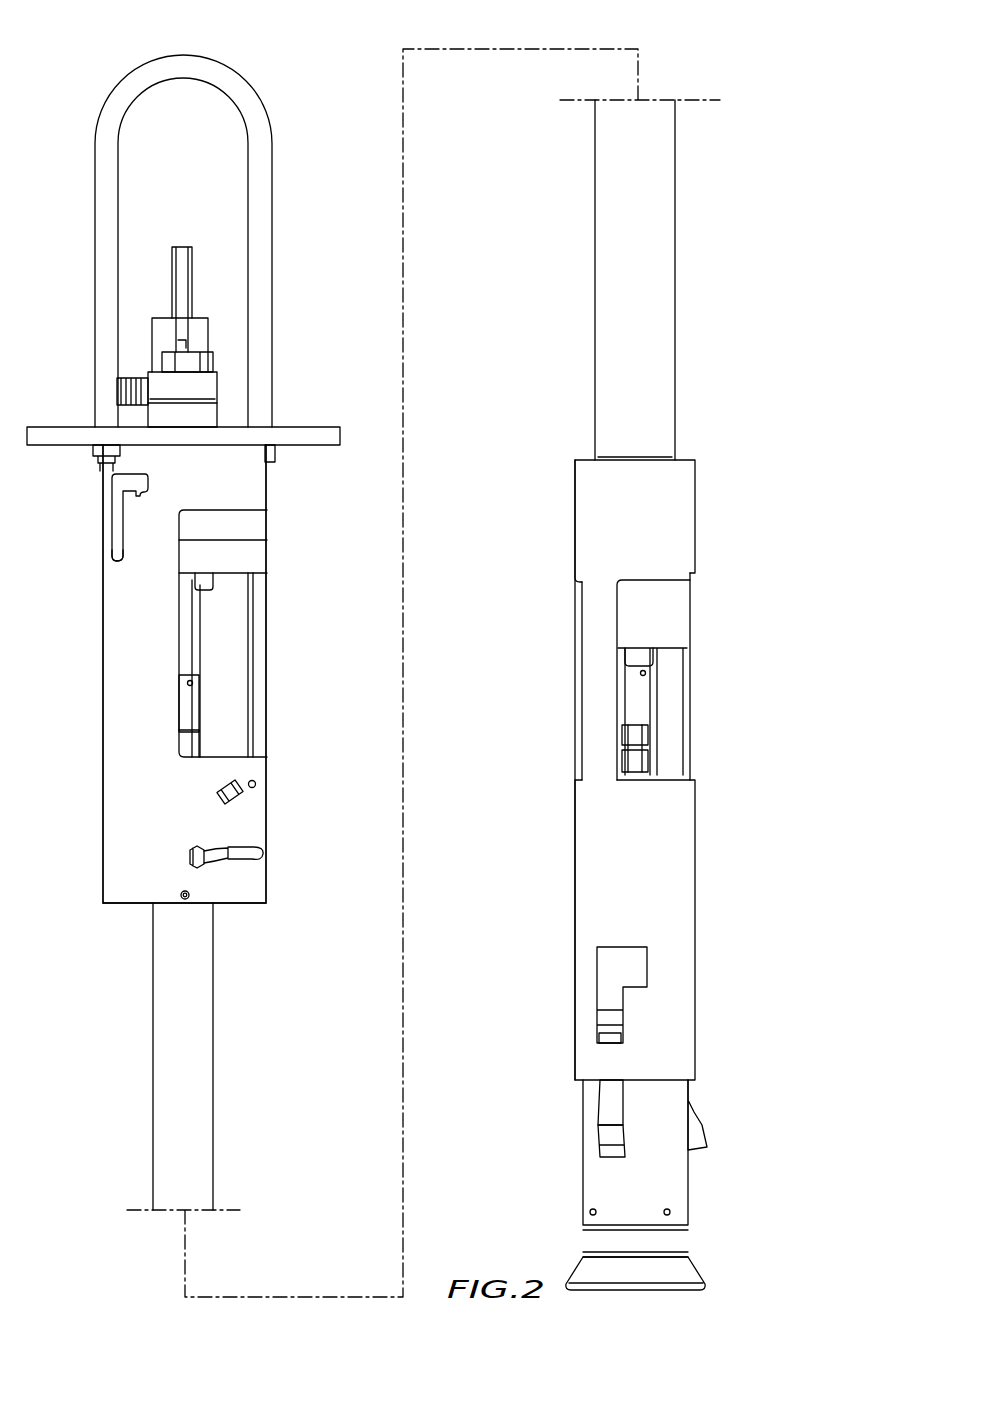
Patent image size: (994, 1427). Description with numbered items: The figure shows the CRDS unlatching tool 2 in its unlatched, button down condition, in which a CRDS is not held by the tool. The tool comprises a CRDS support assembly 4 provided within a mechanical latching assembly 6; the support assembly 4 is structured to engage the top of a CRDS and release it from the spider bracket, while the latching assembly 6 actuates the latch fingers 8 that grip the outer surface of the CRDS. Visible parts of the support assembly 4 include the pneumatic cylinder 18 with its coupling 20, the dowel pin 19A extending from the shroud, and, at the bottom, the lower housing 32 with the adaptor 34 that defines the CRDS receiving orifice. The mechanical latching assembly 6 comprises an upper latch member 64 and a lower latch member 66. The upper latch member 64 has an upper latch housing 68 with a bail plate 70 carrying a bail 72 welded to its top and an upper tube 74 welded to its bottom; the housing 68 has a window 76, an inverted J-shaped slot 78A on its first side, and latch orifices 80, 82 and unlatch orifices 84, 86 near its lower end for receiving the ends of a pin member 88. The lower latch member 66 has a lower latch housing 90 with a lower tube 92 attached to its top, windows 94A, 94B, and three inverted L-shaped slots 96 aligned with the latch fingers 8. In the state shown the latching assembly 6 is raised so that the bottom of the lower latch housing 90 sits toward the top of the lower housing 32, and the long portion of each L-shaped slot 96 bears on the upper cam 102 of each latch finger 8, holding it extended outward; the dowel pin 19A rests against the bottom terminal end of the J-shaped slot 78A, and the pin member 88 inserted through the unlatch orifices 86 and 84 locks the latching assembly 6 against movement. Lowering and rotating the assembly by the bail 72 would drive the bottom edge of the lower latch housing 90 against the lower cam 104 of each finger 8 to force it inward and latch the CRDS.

The CRDS unlatching tool 2 is at (750, 95).
The CRDS support assembly 4 is at (251, 556).
The mechanical latching assembly 6 is at (268, 488).
The latch fingers 8 is at (615, 1097).
The pneumatic cylinder 18 is at (205, 419).
The dowel pin 19A is at (113, 554).
The coupling 20 is at (133, 368).
The lower housing 32 is at (667, 1177).
The adaptor 34 is at (683, 1277).
The upper latch member 64 is at (148, 936).
The lower latch member 66 is at (693, 445).
The upper latch housing 68 is at (122, 641).
The bail plate 70 is at (320, 432).
The bail 72 is at (263, 275).
The upper tube 74 is at (204, 937).
The window 76 is at (210, 522).
The inverted J-shaped slot 78A is at (125, 532).
The latch orifice 80 is at (218, 797).
The latch orifice 82 is at (250, 783).
The unlatch orifice 84 is at (192, 862).
The unlatch orifice 86 is at (225, 850).
The pin member 88 is at (267, 855).
The lower latch housing 90 is at (680, 828).
The lower tube 92 is at (663, 205).
The window 94A is at (673, 593).
The window 94B is at (577, 628).
The inverted L-shaped slots 96 is at (623, 955).
The upper cam 102 is at (617, 1038).
The lower cam 104 is at (603, 1137).